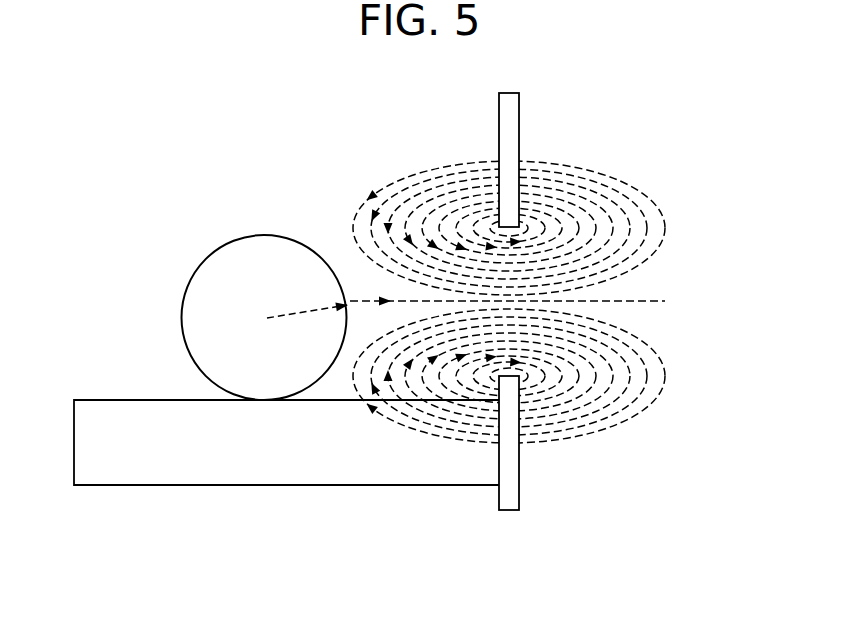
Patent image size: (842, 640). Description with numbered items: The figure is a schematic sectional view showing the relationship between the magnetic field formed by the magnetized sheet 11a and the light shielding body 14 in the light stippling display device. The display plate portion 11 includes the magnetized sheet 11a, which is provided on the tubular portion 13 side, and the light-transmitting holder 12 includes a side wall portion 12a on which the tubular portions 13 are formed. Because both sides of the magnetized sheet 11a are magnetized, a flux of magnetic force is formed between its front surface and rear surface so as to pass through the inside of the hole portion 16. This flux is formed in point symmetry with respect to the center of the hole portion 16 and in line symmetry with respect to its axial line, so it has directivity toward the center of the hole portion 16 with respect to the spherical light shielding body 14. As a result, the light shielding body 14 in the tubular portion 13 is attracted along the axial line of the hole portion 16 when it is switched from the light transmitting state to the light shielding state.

The tubular portion 13 is at (156, 250).
The light shielding body 14 is at (182, 330).
The light-transmitting holder 12 is at (286, 481).
The side wall portion 12a is at (200, 482).
The display plate portion 11 is at (577, 318).
The magnetized sheet 11a is at (510, 510).
The hole portion 16 is at (517, 228).